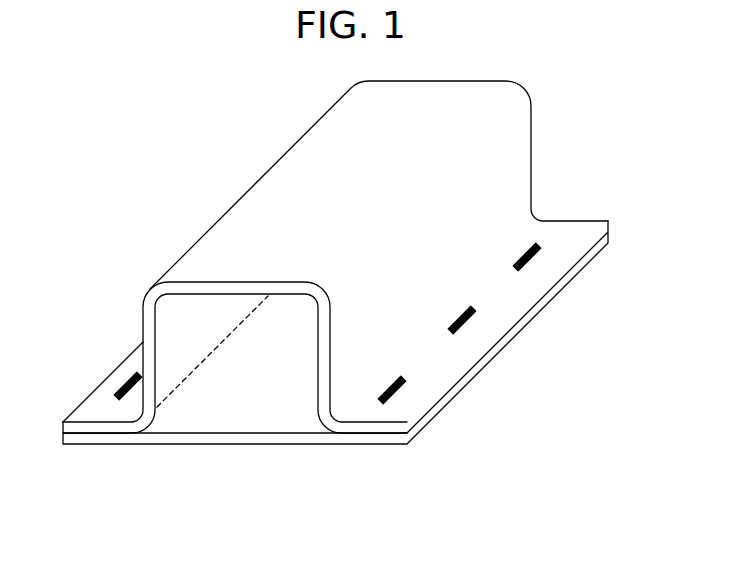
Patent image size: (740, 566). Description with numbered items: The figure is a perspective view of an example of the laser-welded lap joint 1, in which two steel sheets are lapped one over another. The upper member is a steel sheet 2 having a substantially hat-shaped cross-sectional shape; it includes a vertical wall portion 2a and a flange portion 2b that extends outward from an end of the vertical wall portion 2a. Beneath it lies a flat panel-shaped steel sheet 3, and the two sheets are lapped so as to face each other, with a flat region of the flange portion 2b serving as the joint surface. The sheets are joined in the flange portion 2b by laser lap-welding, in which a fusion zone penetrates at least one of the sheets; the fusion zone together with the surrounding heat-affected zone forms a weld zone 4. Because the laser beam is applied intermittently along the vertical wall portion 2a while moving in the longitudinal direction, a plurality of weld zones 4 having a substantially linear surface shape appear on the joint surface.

The laser-welded lap joint 1 is at (179, 99).
The steel sheet 2 is at (335, 311).
The vertical wall portion 2a is at (323, 353).
The flange portion 2b is at (367, 425).
The steel sheet 3 is at (207, 442).
The weld zone 4 is at (124, 378).